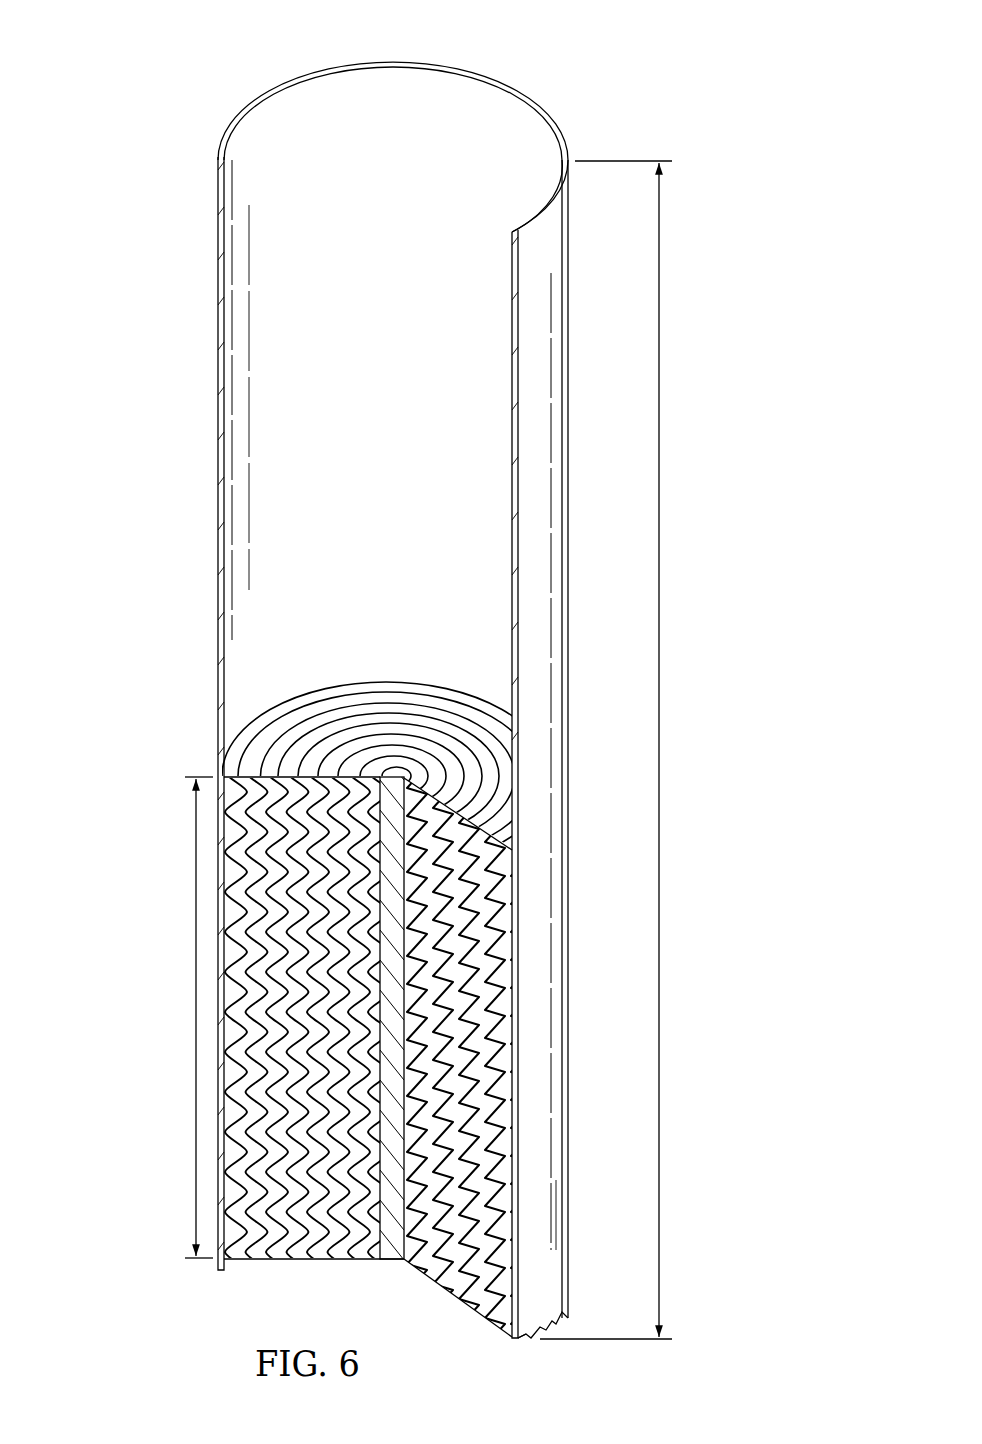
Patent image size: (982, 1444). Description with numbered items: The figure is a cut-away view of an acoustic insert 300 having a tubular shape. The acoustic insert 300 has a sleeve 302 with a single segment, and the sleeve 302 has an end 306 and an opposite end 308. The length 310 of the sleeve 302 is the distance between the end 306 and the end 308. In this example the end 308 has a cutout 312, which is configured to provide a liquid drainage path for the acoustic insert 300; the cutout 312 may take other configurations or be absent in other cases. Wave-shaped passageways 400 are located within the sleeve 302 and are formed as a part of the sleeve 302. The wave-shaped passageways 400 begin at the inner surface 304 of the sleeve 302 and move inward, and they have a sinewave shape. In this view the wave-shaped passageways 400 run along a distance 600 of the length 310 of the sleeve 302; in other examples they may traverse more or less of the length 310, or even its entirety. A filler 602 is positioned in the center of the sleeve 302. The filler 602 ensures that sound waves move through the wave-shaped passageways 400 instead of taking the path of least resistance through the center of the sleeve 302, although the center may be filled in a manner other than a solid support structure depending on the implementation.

The acoustic insert 300 is at (124, 164).
The sleeve 302 is at (570, 594).
The inner surface 304 is at (405, 440).
The end 306 is at (283, 82).
The end 308 is at (565, 1328).
The length 310 is at (659, 745).
The cutout 312 is at (560, 1312).
The wave-shaped passageways 400 is at (242, 728).
The distance 600 is at (196, 1018).
The filler 602 is at (390, 1250).